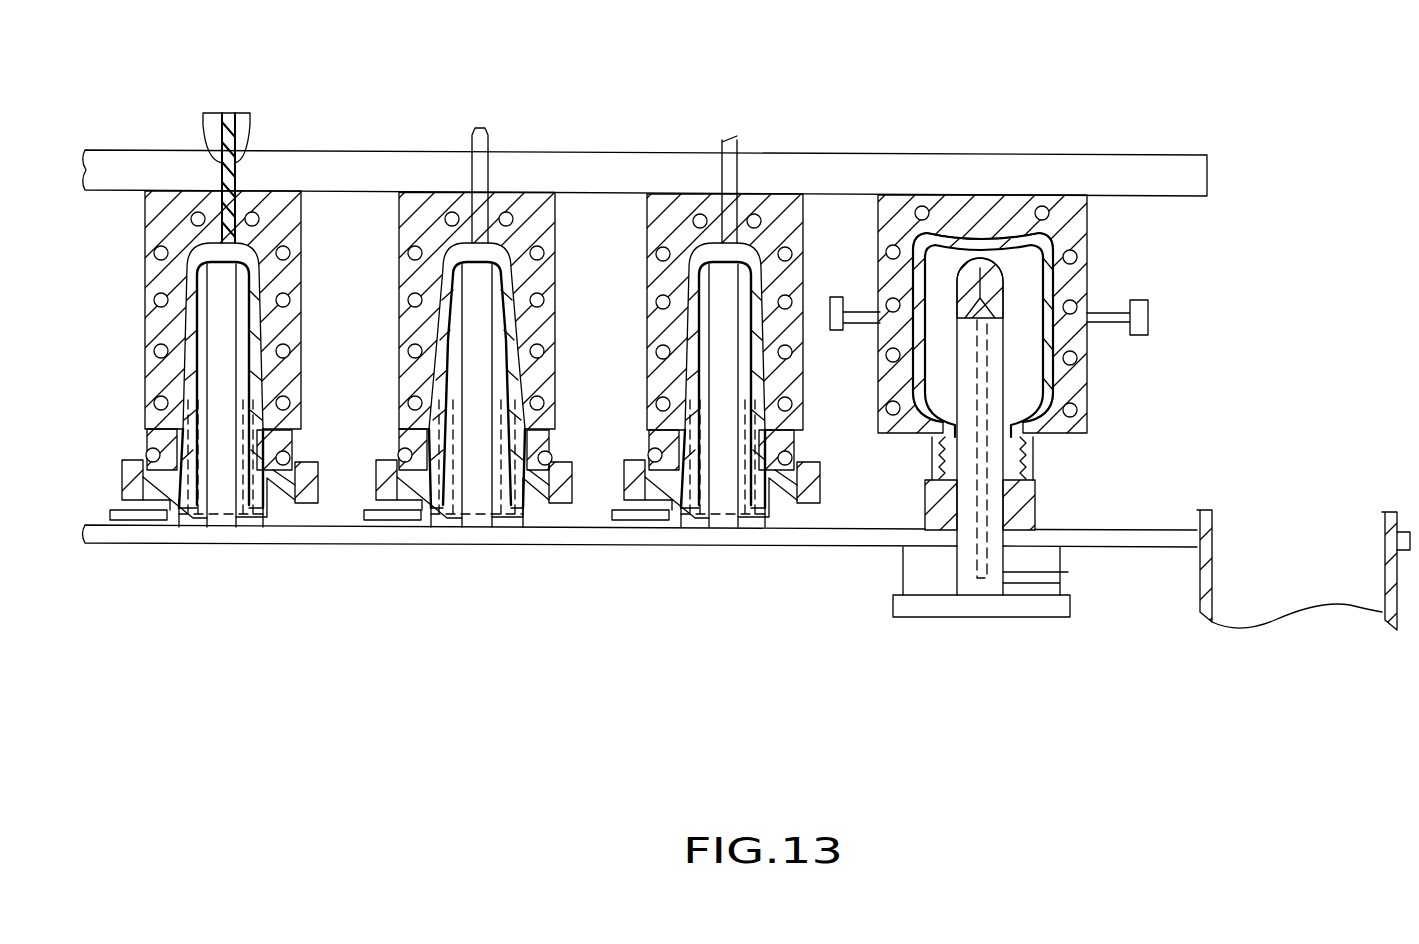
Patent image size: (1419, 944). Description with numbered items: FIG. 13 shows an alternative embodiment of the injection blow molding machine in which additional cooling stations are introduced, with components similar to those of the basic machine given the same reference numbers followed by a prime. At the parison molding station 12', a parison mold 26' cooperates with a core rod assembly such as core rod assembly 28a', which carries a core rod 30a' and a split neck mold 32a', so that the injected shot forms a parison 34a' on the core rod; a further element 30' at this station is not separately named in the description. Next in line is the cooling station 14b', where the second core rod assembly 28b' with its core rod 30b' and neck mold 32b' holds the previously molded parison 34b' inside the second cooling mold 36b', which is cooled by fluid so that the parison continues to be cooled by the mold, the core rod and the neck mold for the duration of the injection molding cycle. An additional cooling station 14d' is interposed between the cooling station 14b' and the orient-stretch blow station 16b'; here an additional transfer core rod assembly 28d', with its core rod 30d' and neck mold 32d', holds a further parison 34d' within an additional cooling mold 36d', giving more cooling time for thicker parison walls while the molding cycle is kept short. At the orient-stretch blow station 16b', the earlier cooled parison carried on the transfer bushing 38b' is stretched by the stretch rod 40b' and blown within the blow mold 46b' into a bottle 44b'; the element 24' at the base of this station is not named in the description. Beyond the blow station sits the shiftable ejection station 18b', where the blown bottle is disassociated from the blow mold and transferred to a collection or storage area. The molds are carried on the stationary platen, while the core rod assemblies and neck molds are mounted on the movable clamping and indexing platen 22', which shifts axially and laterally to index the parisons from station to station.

The parison molding station 12' is at (290, 121).
The parison cooling station 14b' is at (547, 161).
The additional cooling station 14d' is at (792, 161).
The orient-stretch blow station 16b' is at (995, 256).
The shiftable ejection station 18b' is at (1303, 529).
The movable clamping and indexing platen 22' is at (622, 558).
The stretch rod 24' is at (984, 469).
The parison mold 26' is at (173, 310).
The core rod assembly 28a' is at (209, 551).
The core rod assembly 28b' is at (471, 551).
The additional transfer core rod assembly 28d' is at (731, 551).
The sprue 30' is at (263, 144).
The core rod 30a' is at (154, 385).
The core rod 30b' is at (423, 385).
The core rod 30d' is at (665, 385).
The split neck mold 32a' is at (177, 469).
The split neck mold 32b' is at (447, 465).
The neck mold 32d' is at (772, 395).
The parison 34a' is at (154, 395).
The second parison 34b' is at (532, 395).
The parison 34d' is at (600, 223).
The second cooling mold 36b' is at (438, 311).
The additional cooling mold 36d' is at (760, 312).
The transfer bushing 38b' is at (1026, 502).
The stretch rod 40b' is at (1092, 386).
The bottle 44b' is at (1060, 452).
The second blow mold 46b' is at (1050, 335).